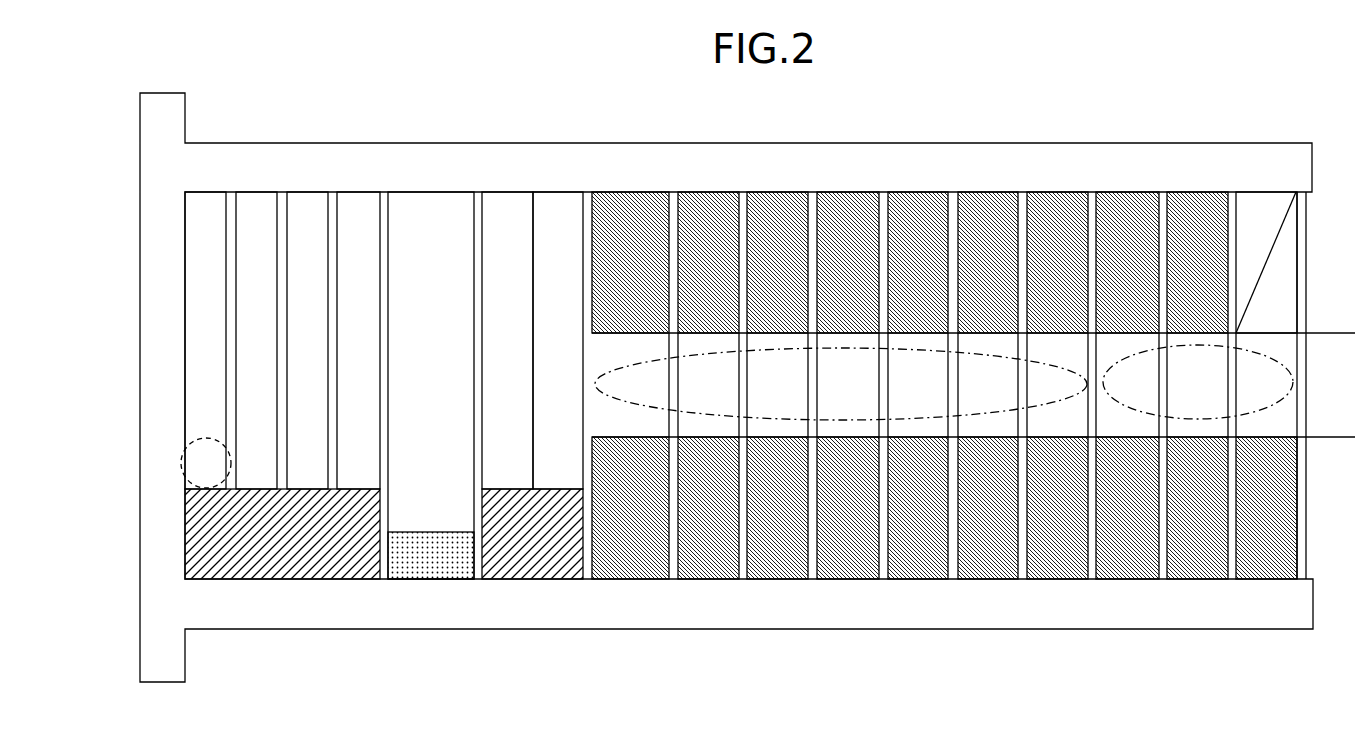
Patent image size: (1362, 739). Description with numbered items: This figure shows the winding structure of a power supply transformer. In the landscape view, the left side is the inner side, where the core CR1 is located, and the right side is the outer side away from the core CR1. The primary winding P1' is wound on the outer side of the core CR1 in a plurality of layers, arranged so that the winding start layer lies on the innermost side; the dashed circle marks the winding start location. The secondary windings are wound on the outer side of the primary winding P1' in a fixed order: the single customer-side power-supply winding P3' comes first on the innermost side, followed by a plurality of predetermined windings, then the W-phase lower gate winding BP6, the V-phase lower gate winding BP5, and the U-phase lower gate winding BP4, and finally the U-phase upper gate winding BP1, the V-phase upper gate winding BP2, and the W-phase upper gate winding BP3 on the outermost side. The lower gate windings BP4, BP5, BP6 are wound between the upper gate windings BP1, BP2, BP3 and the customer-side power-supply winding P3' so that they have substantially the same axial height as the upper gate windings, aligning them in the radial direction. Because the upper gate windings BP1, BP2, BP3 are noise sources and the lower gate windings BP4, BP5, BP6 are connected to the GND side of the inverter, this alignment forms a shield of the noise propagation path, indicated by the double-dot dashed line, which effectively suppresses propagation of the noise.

The core CR1 is at (148, 276).
The primary winding P1' is at (282, 340).
The customer-side power-supply winding P3' is at (431, 385).
The U-phase upper gate winding BP1 is at (1127, 385).
The V-phase upper gate winding BP2 is at (1197, 385).
The W-phase upper gate winding BP3 is at (1266, 385).
The U-phase lower gate winding BP4 is at (1057, 385).
The V-phase lower gate winding BP5 is at (988, 385).
The W-phase lower gate winding BP6 is at (918, 385).